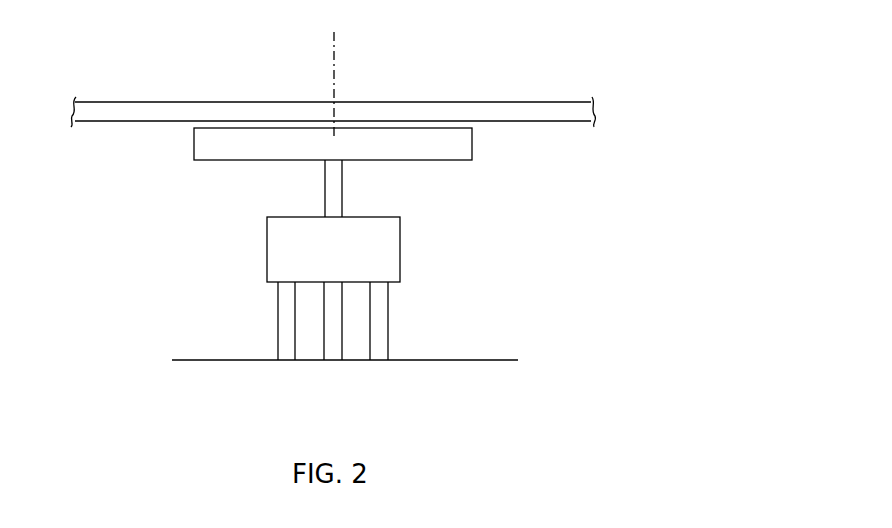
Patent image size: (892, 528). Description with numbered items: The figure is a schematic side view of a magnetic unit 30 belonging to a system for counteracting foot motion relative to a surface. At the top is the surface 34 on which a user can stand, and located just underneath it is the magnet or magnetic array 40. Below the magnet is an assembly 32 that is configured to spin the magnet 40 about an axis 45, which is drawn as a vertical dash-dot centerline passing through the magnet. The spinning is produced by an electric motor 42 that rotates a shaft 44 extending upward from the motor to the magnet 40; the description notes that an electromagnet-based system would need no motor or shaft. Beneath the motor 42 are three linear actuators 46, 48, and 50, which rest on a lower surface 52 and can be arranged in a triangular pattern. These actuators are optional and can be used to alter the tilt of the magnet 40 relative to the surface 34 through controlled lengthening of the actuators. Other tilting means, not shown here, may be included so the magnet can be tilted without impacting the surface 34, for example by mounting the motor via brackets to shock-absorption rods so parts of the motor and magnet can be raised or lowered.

The magnetic unit 30 is at (141, 191).
The assembly 32 is at (241, 266).
The surface 34 is at (540, 102).
The magnet or magnetic array 40 is at (458, 160).
The electric motor 42 is at (400, 252).
The shaft 44 is at (342, 188).
The axis 45 is at (336, 70).
The linear actuator 46 is at (277, 318).
The linear actuator 48 is at (323, 346).
The linear actuator 50 is at (388, 322).
The lower surface 52 is at (475, 360).